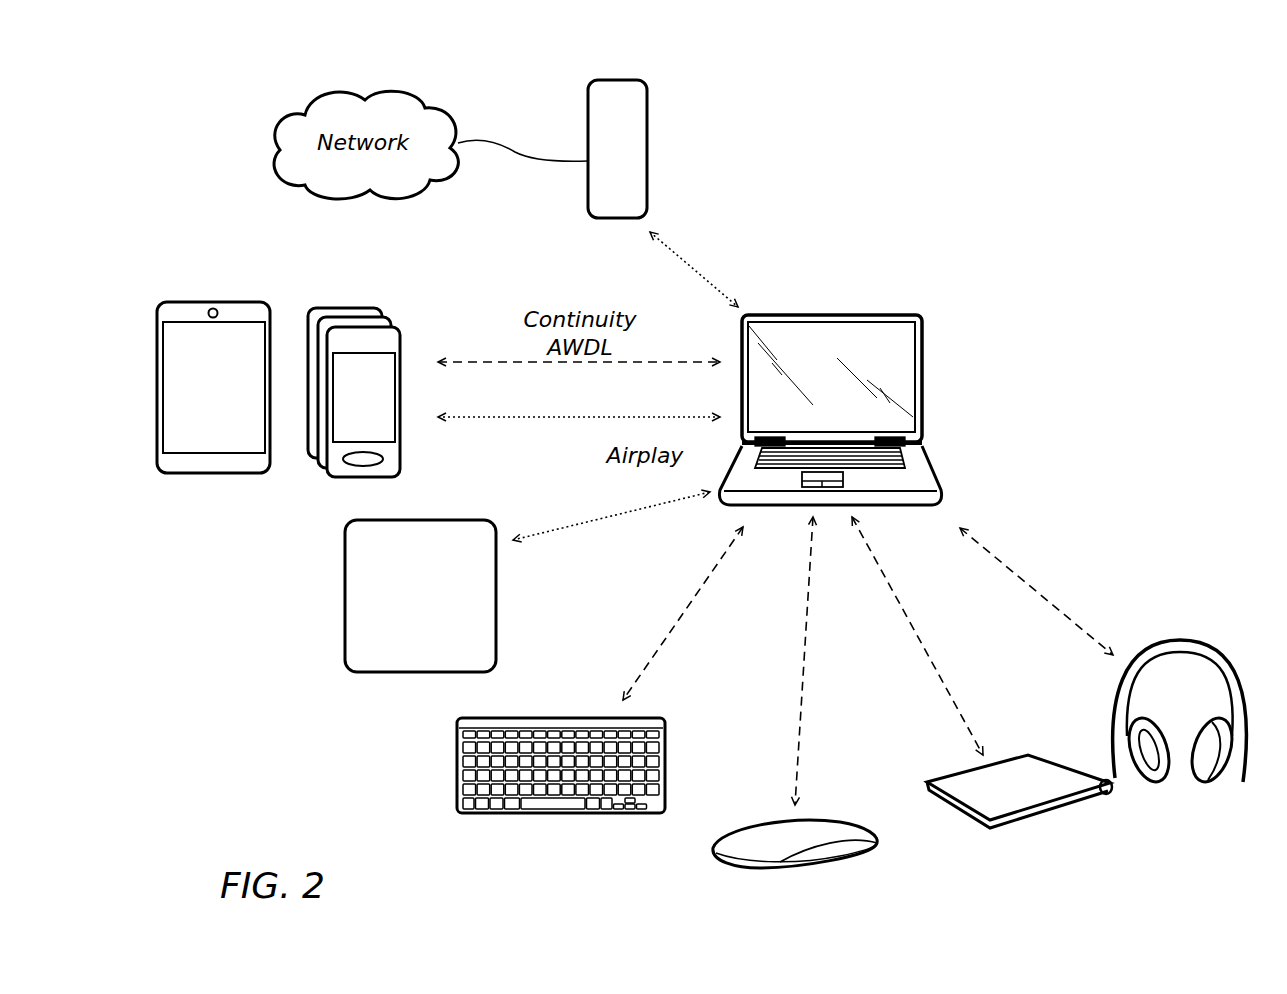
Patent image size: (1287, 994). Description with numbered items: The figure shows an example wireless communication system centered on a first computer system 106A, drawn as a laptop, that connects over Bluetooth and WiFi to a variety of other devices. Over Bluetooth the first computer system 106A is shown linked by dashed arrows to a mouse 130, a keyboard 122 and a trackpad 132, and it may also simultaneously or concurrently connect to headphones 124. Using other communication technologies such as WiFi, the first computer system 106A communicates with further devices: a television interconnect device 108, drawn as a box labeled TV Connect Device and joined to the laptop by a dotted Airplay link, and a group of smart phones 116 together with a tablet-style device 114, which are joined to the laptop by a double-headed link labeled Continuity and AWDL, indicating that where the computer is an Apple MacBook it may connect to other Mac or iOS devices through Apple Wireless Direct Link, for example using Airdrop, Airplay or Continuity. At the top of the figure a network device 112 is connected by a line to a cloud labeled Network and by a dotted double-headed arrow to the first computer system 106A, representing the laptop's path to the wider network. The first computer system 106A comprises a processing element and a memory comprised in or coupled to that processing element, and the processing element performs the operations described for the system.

The first computer system 106A is at (824, 314).
The TV connect device 108 is at (427, 520).
The network router 112 is at (615, 80).
The tablet device 114 is at (214, 302).
The mobile phones 116 is at (348, 308).
The keyboard 122 is at (553, 813).
The headphones 124 is at (1175, 640).
The mouse 130 is at (783, 868).
The trackpad 132 is at (1032, 808).